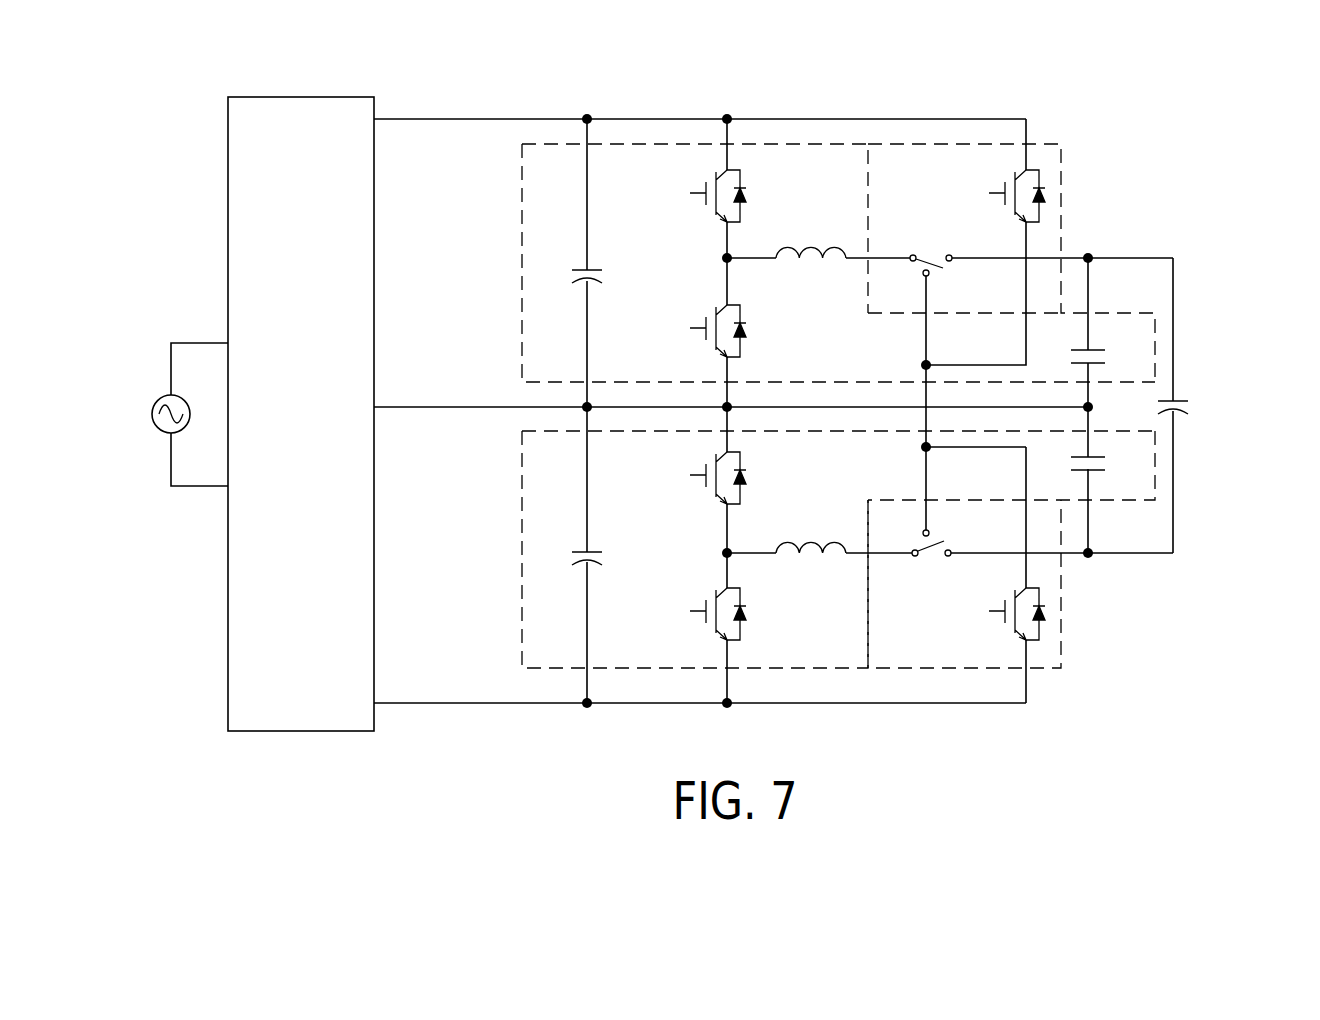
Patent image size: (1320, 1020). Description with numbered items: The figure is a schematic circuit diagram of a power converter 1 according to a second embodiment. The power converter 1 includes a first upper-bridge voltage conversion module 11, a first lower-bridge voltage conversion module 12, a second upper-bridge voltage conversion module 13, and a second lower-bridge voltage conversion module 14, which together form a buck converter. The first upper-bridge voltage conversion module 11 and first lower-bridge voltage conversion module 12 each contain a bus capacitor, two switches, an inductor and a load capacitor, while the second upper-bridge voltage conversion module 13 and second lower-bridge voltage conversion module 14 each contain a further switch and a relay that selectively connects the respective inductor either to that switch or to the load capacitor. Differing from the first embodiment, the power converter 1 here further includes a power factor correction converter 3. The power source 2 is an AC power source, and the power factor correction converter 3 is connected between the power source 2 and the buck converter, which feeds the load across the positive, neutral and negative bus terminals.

The power converter 1 is at (1269, 88).
The power source 2 is at (162, 397).
The power factor correction converter 3 is at (301, 95).
The first upper-bridge voltage conversion module 11 is at (523, 187).
The first lower-bridge voltage conversion module 12 is at (523, 478).
The second upper-bridge voltage conversion module 13 is at (1062, 188).
The second lower-bridge voltage conversion module 14 is at (1062, 625).